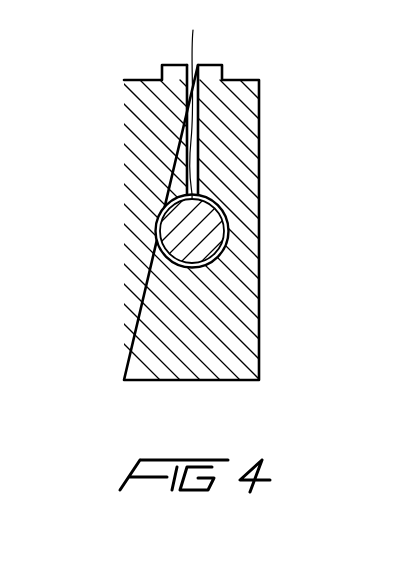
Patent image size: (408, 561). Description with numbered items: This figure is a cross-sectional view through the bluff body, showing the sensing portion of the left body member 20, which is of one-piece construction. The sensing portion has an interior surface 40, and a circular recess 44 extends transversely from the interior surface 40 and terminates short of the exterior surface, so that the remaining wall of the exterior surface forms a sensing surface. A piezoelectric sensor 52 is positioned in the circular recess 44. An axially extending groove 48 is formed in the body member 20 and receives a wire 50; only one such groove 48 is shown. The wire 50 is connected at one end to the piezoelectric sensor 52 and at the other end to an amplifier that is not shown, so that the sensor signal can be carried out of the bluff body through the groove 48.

The left body member 20 is at (265, 135).
The interior surface 40 is at (146, 202).
The circular recess 44 is at (223, 208).
The axially extending groove 48 is at (199, 122).
The wire 50 is at (193, 40).
The piezoelectric sensor 52 is at (215, 247).